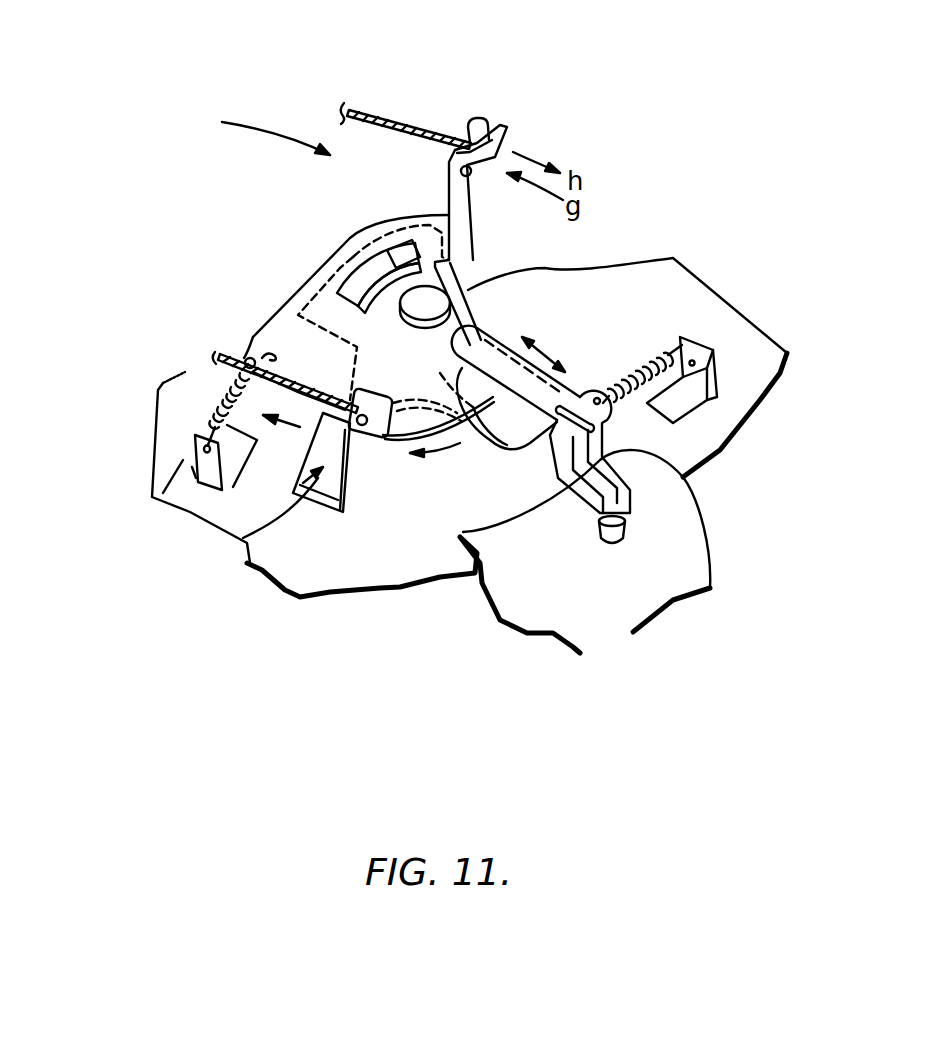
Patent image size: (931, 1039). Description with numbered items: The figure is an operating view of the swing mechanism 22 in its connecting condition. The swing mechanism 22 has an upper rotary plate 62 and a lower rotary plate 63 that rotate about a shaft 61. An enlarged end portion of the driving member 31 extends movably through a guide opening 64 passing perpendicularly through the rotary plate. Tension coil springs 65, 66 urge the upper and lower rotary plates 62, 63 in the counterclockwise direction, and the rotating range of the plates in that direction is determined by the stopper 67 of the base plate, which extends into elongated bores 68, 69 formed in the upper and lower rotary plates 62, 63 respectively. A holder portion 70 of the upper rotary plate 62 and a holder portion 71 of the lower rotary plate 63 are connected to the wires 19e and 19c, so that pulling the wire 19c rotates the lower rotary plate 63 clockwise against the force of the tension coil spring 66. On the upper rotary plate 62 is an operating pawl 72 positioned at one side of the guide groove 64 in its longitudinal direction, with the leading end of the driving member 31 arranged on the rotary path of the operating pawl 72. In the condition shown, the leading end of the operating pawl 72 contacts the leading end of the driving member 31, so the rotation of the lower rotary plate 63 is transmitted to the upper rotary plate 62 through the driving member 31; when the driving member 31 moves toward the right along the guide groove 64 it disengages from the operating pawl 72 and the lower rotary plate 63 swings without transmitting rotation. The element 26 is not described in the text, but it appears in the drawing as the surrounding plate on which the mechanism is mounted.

The wire 19c is at (228, 355).
The wire 19e is at (372, 114).
The swing mechanism 22 is at (208, 145).
The mounting plate 26 is at (678, 542).
The driving member 31 is at (503, 331).
The shaft 61 is at (437, 300).
The upper rotary plate 62 is at (268, 334).
The lower rotary plate 63 is at (243, 538).
The guide opening 64 is at (527, 447).
The tension coil spring 65 is at (215, 403).
The tension coil spring 66 is at (640, 362).
The stopper 67 is at (395, 250).
The elongated bore 68 is at (347, 243).
The elongated bore 69 is at (350, 282).
The holder portion 70 is at (503, 123).
The holder portion 71 is at (355, 462).
The operating pawl 72 is at (497, 440).